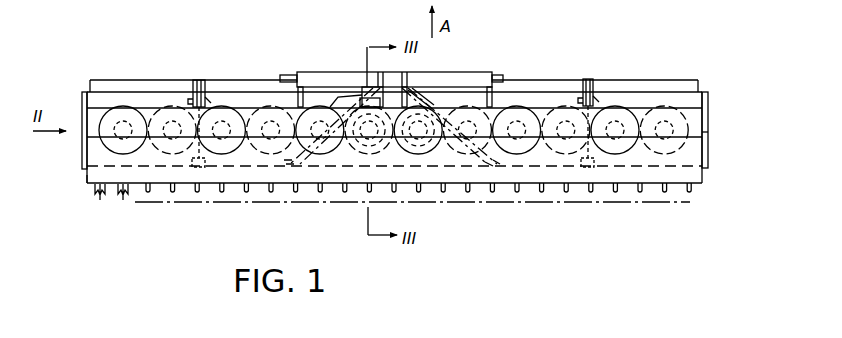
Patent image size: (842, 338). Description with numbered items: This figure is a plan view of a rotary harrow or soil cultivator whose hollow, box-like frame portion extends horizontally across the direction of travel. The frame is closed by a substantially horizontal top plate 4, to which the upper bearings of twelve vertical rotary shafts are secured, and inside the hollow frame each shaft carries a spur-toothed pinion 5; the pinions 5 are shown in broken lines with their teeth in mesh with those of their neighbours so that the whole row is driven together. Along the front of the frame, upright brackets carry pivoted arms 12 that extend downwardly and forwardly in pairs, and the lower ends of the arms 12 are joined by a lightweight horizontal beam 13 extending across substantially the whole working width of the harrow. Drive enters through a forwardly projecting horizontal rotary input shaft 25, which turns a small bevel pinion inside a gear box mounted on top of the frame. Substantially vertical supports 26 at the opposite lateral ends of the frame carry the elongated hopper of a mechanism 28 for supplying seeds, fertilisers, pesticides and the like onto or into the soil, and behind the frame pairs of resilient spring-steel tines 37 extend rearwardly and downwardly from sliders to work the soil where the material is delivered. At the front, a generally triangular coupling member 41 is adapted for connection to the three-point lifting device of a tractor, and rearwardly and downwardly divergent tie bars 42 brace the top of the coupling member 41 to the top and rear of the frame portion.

The top plate 4 is at (643, 98).
The spur-toothed pinion 5 is at (123, 108).
The arms 12 is at (193, 85).
The beam 13 is at (243, 73).
The rotary input shaft 25 is at (375, 85).
The supports 26 is at (703, 103).
The mechanism for supplying materials 28 is at (85, 175).
The tines 37 is at (92, 199).
The coupling member 41 is at (463, 80).
The tie bars 42 is at (412, 88).